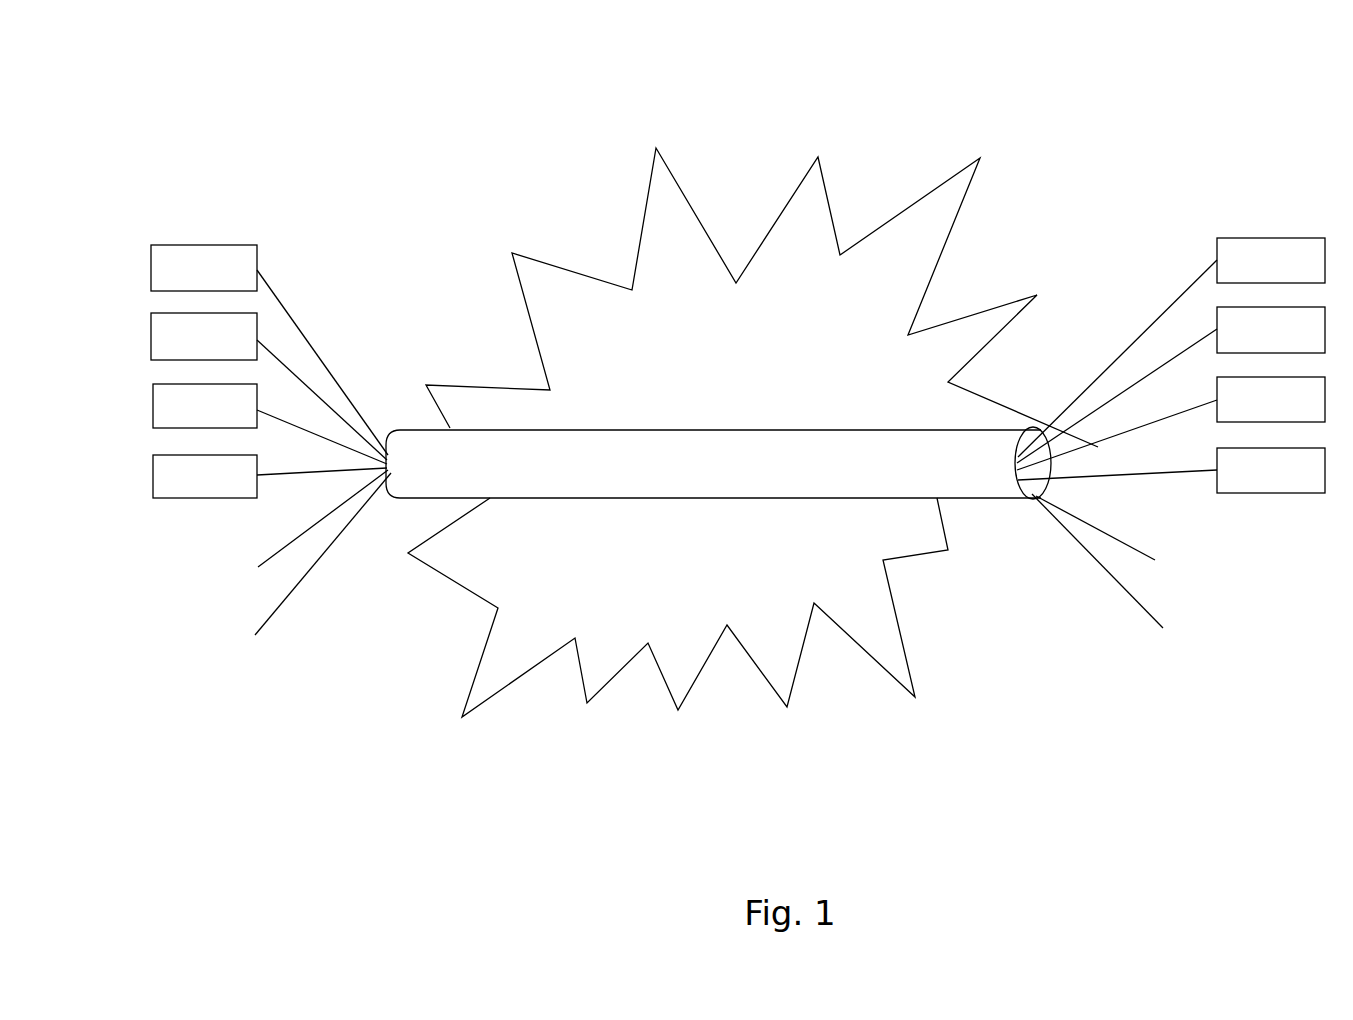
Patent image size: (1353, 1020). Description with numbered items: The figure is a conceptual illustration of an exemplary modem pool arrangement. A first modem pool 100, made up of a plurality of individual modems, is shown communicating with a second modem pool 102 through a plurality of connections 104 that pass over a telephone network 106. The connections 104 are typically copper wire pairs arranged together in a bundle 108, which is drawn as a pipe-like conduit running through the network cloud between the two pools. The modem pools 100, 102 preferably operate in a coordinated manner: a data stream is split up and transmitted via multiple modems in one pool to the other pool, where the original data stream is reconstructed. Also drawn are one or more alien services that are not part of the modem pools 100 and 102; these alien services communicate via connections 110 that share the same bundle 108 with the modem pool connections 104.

The first modem pool 100 is at (148, 189).
The second modem pool 102 is at (1234, 182).
The connections 104 is at (287, 298).
The telephone network 106 is at (655, 267).
The bundle 108 is at (430, 428).
The connections 110 is at (303, 590).